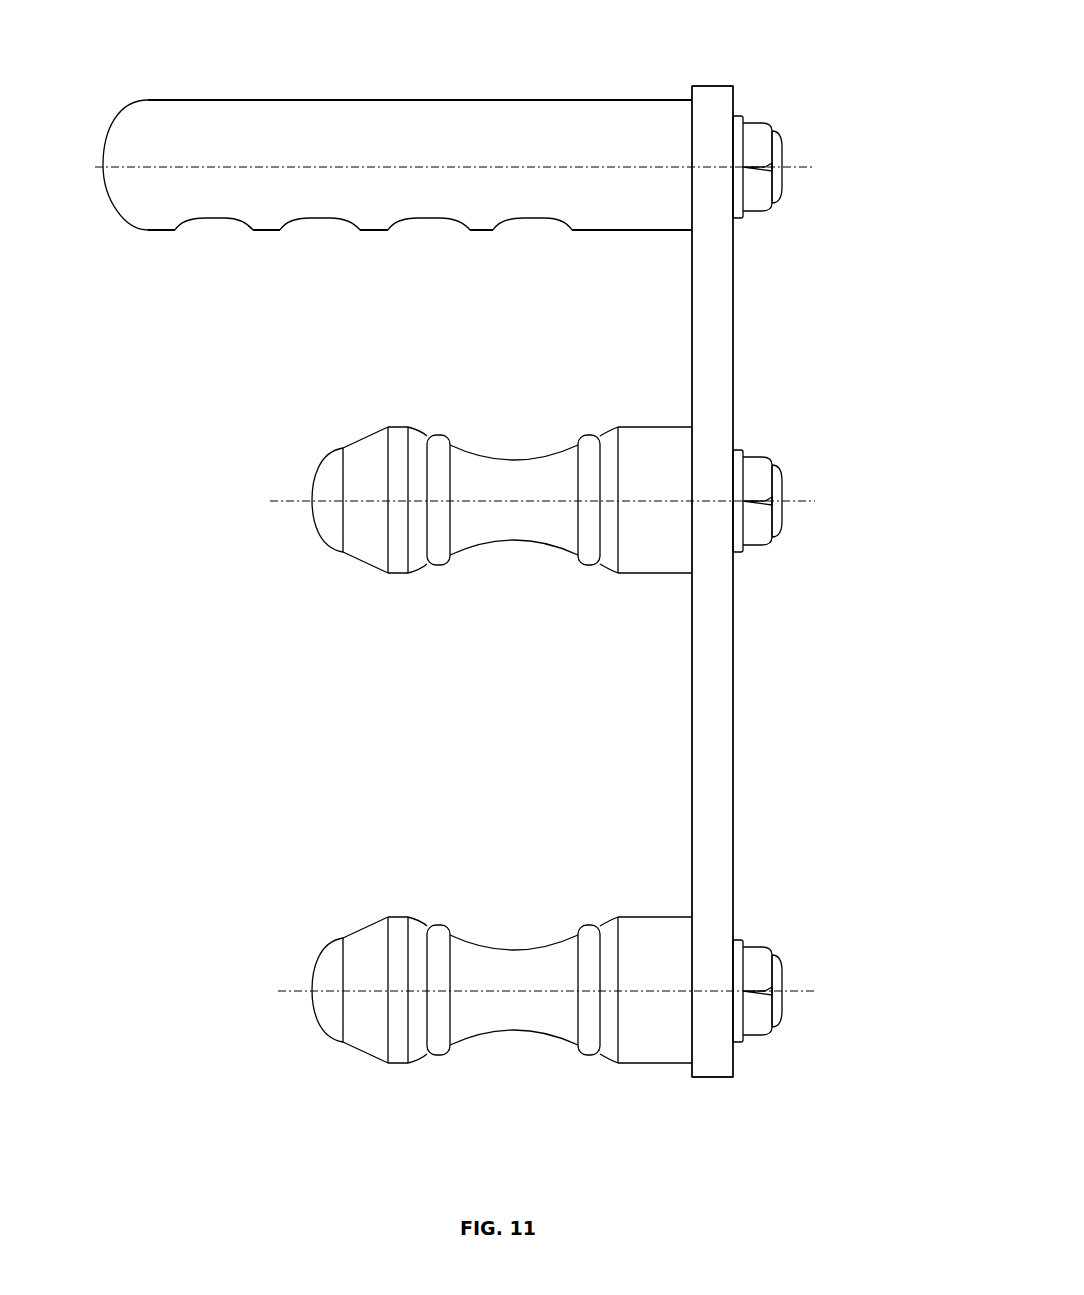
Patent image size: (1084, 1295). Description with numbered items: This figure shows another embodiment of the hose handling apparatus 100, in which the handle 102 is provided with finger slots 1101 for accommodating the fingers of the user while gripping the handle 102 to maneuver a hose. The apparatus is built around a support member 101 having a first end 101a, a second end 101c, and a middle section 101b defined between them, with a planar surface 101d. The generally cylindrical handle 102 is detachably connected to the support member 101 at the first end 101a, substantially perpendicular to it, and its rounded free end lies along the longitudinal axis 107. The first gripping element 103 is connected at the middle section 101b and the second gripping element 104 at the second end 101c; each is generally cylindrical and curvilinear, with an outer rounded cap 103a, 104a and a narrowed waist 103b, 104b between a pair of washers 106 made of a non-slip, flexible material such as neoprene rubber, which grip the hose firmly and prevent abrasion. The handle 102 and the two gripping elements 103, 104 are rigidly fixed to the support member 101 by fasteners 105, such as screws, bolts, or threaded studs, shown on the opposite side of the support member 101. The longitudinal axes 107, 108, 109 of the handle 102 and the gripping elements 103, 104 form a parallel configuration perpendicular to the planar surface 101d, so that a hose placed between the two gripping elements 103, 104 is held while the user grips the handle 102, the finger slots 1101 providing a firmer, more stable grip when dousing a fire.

The hose handling apparatus 100 is at (727, 68).
The support member 101 is at (704, 85).
The first end 101a is at (748, 91).
The middle section 101b is at (712, 506).
The second end 101c is at (731, 1087).
The planar surface 101d is at (690, 281).
The handle 102 is at (394, 180).
The longitudinal axis 107 is at (97, 172).
The finger slots 1101 is at (547, 224).
The first gripping element 103 is at (465, 488).
The rounded cap of upper knob 103a is at (310, 455).
The concave neck of upper knob 103b is at (518, 542).
The second gripping element 104 is at (466, 946).
The rounded cap of lower knob 104a is at (308, 950).
The concave neck of lower knob 104b is at (515, 948).
The fasteners 105 is at (758, 214).
The washers 106 is at (576, 440).
The longitudinal axis 108 is at (280, 503).
The longitudinal axis 109 is at (291, 993).